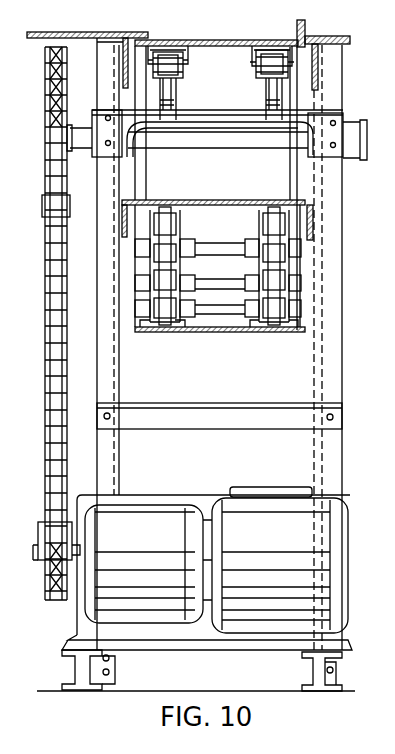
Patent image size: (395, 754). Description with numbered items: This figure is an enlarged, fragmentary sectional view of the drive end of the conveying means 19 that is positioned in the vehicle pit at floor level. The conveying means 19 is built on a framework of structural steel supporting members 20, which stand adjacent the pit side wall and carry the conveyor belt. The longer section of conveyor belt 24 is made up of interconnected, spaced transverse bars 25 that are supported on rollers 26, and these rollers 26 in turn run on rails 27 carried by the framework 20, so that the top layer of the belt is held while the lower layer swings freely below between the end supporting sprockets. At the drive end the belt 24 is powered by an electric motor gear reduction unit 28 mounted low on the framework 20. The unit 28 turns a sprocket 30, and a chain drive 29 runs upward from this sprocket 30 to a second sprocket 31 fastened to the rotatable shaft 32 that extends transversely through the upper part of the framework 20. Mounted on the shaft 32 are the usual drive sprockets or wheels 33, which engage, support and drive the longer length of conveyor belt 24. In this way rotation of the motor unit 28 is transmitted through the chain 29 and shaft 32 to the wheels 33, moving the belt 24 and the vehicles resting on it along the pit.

The conveying means 19 is at (77, 247).
The structural steel supporting members 20 is at (112, 355).
The long section of conveyor belt 24 is at (144, 26).
The transverse bars 25 is at (284, 40).
The rollers 26 is at (163, 56).
The rails 27 is at (270, 97).
The electric motor gear reduction unit 28 is at (146, 515).
The chain drive 29 is at (52, 441).
The sprocket 30 is at (40, 545).
The sprocket 31 is at (48, 100).
The rotatable shaft 32 is at (70, 133).
The drive sprockets 33 is at (195, 118).